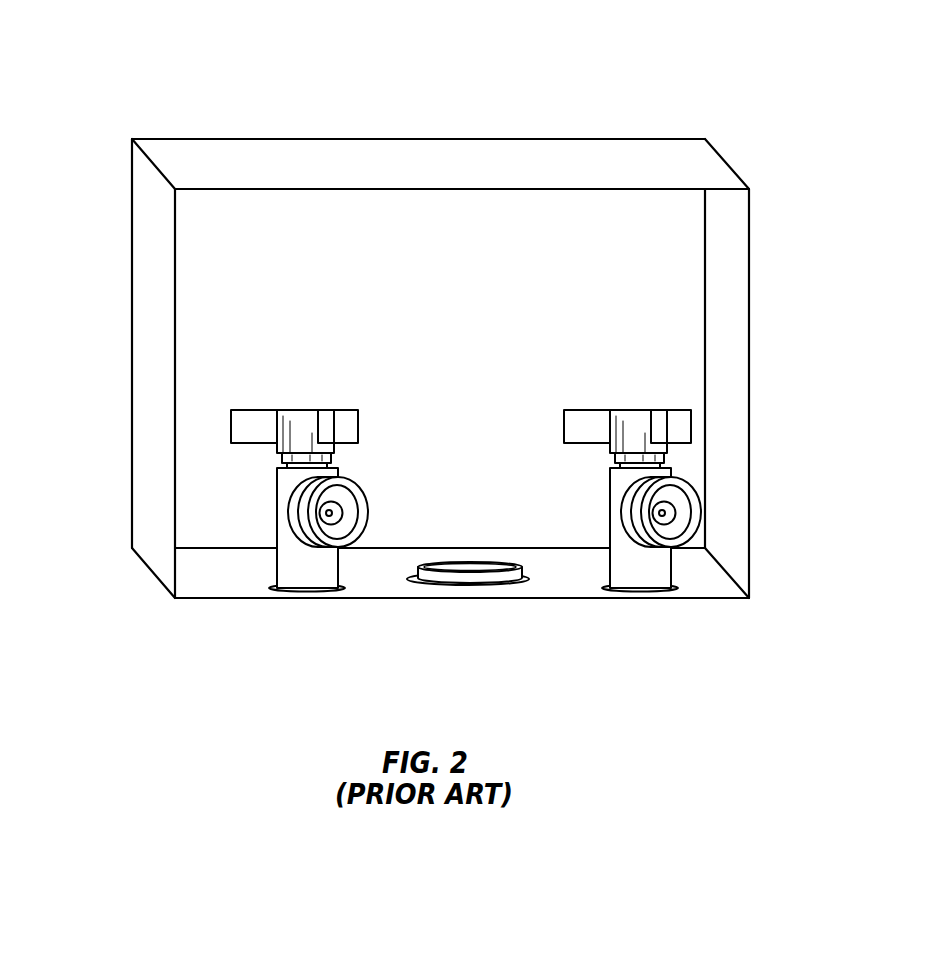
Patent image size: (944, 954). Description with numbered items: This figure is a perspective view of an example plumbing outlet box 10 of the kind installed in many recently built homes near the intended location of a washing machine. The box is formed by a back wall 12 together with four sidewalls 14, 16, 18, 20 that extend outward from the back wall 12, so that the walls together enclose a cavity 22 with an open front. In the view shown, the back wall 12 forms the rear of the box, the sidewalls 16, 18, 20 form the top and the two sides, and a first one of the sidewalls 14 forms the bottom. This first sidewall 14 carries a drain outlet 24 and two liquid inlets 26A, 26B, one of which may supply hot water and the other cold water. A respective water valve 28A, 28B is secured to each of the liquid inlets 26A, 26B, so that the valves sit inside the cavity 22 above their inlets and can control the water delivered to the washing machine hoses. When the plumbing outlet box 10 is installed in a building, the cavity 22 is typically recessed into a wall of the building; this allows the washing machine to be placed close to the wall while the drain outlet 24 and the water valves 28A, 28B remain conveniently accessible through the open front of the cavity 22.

The plumbing outlet box 10 is at (435, 341).
The back wall 12 is at (325, 268).
The first sidewall 14 is at (694, 572).
The sidewall 16 is at (582, 172).
The sidewall 18 is at (148, 344).
The sidewall 20 is at (726, 356).
The cavity 22 is at (448, 333).
The drain outlet 24 is at (455, 568).
The liquid inlet 26A is at (283, 590).
The liquid inlet 26B is at (616, 590).
The water valve 28A is at (299, 428).
The water valve 28B is at (632, 428).